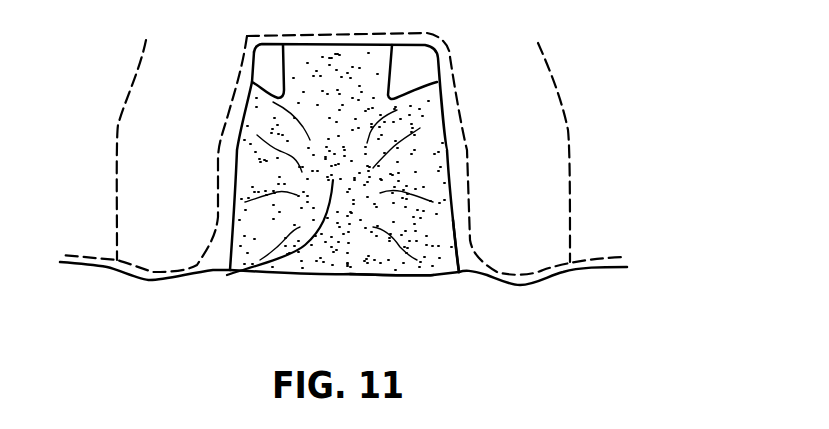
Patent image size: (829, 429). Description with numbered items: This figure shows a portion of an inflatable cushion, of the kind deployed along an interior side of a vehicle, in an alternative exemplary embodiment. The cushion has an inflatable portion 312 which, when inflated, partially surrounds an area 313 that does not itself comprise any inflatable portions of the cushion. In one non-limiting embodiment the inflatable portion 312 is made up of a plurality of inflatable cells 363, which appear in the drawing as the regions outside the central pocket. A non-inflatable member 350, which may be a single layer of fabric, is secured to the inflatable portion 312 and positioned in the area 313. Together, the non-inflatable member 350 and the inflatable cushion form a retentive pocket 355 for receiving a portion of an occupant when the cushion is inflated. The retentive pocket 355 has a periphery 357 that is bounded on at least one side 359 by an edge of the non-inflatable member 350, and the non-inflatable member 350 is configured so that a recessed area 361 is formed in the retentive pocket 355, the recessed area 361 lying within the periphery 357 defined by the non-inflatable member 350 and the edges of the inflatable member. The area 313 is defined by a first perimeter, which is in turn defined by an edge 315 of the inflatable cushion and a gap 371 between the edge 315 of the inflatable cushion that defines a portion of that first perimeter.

The inflatable portion 312 is at (530, 148).
The area 313 is at (437, 82).
The edge of the inflatable cushion 315 is at (225, 223).
The non-inflatable member 350 is at (449, 249).
The retentive pocket 355 is at (366, 97).
The periphery 357 is at (341, 283).
The side 359 is at (377, 273).
The recessed area 361 is at (227, 275).
The inflatable cells 363 is at (623, 212).
The gap 371 is at (230, 293).